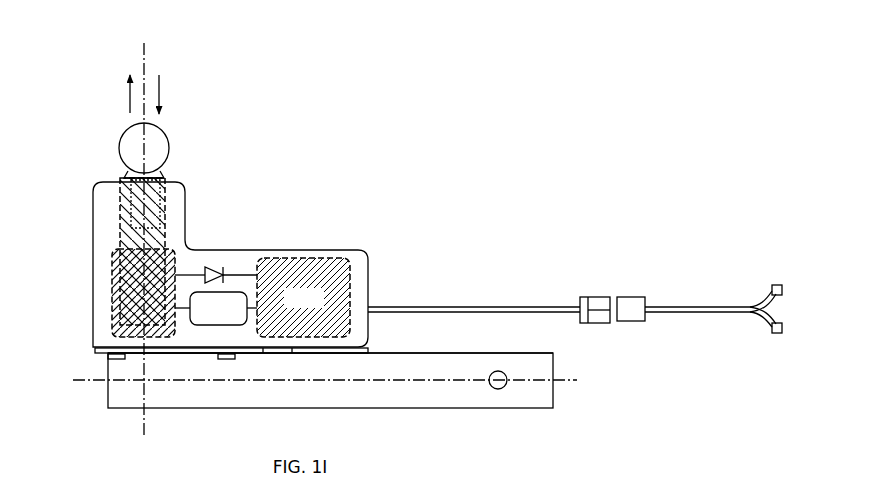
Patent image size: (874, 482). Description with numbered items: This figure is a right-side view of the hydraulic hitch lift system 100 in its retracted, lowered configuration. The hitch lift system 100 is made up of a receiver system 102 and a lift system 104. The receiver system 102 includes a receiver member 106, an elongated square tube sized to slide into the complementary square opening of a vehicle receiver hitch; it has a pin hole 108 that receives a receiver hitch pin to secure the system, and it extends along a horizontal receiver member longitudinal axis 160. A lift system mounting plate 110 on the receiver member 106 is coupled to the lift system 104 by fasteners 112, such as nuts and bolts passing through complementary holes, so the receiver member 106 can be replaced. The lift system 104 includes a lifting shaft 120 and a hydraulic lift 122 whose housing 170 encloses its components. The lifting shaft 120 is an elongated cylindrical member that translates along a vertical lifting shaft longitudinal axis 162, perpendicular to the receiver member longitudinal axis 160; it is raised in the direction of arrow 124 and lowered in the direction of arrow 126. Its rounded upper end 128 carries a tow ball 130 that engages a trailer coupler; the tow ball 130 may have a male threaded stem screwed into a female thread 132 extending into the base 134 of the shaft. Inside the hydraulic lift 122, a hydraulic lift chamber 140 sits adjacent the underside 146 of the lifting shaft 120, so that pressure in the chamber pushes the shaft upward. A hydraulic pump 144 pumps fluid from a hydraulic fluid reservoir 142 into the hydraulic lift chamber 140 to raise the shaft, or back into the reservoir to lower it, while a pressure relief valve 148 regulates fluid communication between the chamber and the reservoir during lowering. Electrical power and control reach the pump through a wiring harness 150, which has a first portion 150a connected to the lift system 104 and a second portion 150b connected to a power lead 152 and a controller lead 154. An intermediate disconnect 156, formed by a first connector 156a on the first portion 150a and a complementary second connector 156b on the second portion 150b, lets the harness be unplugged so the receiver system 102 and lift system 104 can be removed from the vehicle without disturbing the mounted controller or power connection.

The hitch lift system 100 is at (437, 241).
The receiver system 102 is at (348, 381).
The lift system 104 is at (233, 223).
The receiver member 106 is at (504, 347).
The pin hole 108 is at (488, 384).
The lift system mounting plate 110 is at (104, 351).
The fasteners 112 is at (106, 360).
The lifting shaft 120 is at (181, 139).
The hydraulic lift 122 is at (233, 262).
The arrow 124 is at (123, 95).
The arrow 126 is at (166, 93).
The upper end 128 is at (176, 136).
The tow ball 130 is at (168, 144).
The female thread 132 is at (183, 251).
The base 134 is at (165, 225).
The hydraulic lift chamber 140 is at (145, 260).
The hydraulic fluid reservoir 142 is at (303, 297).
The hydraulic pump 144 is at (216, 308).
The underside 146 is at (128, 326).
The pressure relief valve 148 is at (216, 262).
The wiring harness 150 is at (599, 291).
The first portion 150a is at (513, 300).
The second portion 150b is at (678, 301).
The power lead 152 is at (782, 338).
The controller lead 154 is at (779, 283).
The intermediate disconnect 156 is at (612, 272).
The first connector 156a is at (593, 296).
The second connector 156b is at (632, 296).
The receiver member longitudinal axis 160 is at (573, 381).
The lifting shaft longitudinal axis 162 is at (150, 62).
The housing 170 is at (365, 246).